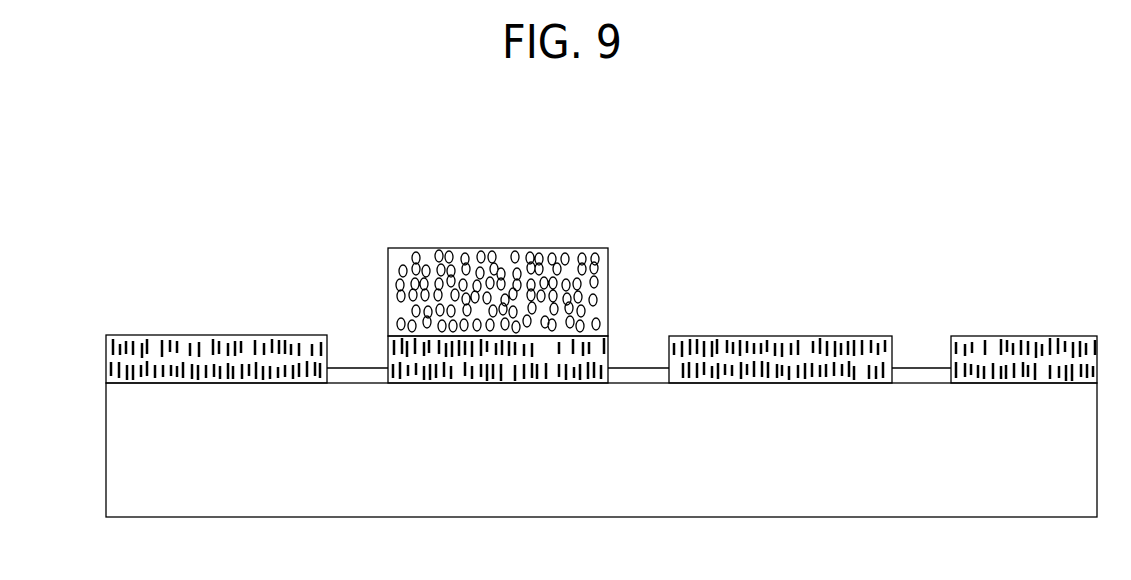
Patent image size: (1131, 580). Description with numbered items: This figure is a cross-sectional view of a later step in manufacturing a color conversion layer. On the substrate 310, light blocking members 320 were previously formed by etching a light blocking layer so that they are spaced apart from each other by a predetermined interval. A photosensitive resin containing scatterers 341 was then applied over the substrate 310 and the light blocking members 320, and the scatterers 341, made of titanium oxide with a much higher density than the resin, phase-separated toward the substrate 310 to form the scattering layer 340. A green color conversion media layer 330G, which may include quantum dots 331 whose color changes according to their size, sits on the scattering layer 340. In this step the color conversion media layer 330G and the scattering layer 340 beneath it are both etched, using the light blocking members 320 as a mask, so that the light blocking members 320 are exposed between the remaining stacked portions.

The substrate 310 is at (92, 383).
The light blocking member 320 is at (357, 375).
The green color conversion media layer 330G is at (487, 250).
The quantum dot 331 is at (566, 255).
The scattering layer 340 is at (112, 381).
The scatterers 341 is at (116, 349).